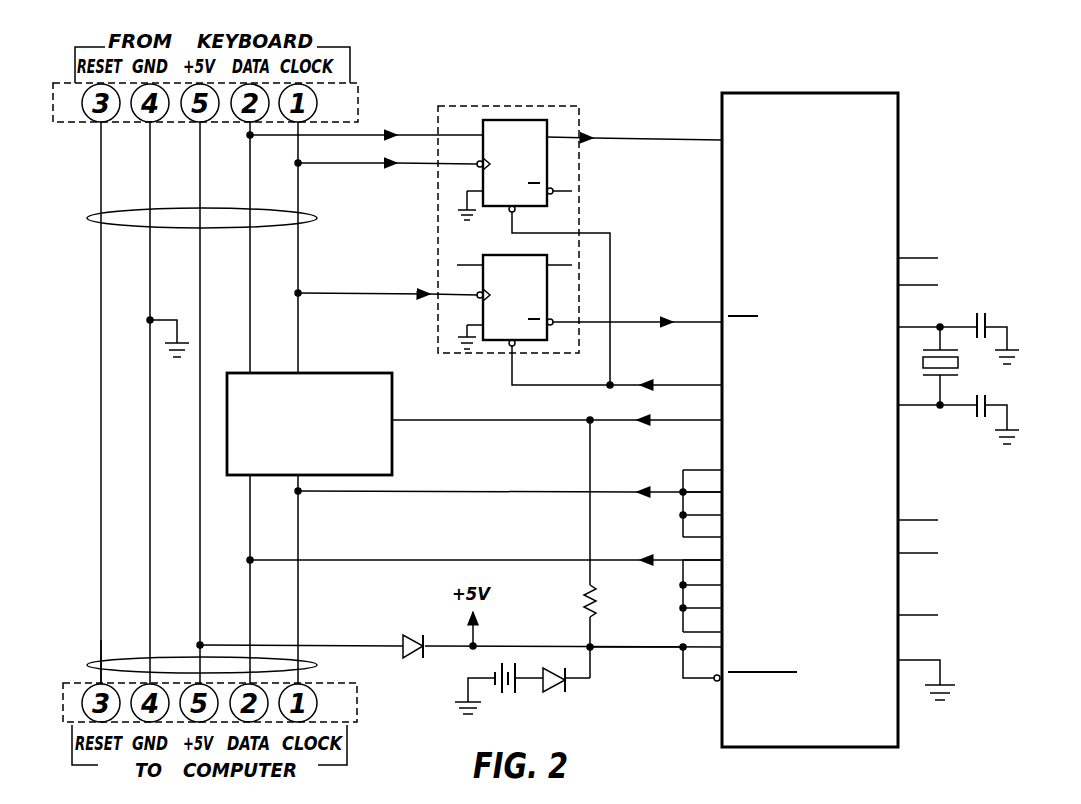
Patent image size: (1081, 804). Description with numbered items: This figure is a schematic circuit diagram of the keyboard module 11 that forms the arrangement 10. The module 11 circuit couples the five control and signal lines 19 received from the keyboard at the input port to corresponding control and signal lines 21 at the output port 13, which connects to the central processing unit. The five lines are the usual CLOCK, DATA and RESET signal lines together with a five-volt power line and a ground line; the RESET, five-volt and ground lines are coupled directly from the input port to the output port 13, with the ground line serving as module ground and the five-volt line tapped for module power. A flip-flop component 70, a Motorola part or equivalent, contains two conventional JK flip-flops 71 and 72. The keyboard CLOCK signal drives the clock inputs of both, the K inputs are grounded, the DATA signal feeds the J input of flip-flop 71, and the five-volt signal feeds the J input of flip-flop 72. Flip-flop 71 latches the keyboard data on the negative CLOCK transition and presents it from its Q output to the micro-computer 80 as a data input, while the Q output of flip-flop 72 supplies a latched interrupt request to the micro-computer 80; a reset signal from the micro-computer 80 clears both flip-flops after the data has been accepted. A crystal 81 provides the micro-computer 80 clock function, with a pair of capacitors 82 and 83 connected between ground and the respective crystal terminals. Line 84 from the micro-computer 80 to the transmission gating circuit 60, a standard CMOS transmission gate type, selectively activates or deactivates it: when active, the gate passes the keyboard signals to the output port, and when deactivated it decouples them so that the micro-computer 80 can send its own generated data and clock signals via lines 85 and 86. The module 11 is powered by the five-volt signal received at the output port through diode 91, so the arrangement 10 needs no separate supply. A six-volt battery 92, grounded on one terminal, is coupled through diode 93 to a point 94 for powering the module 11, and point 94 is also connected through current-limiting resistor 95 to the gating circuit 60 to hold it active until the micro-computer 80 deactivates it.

The arrangement 10 is at (96, 490).
The module 11 is at (648, 112).
The output port 13 is at (82, 680).
The control and signal lines 19 is at (95, 211).
The control and signal lines 21 is at (90, 658).
The transmission gating circuit 60 is at (237, 373).
The flip-flop component 70 is at (583, 122).
The JK flip-flop 71 is at (547, 155).
The JK flip-flop 72 is at (547, 290).
The micro-computer circuit 80 is at (780, 93).
The crystal 81 is at (928, 345).
The capacitor 82 is at (993, 316).
The capacitor 83 is at (990, 398).
The line 84 is at (518, 420).
The line 85 is at (464, 492).
The line 86 is at (374, 558).
The diode 91 is at (400, 660).
The battery 92 is at (516, 695).
The diode 93 is at (548, 668).
The point 94 is at (593, 649).
The current-limiting resistor 95 is at (584, 590).